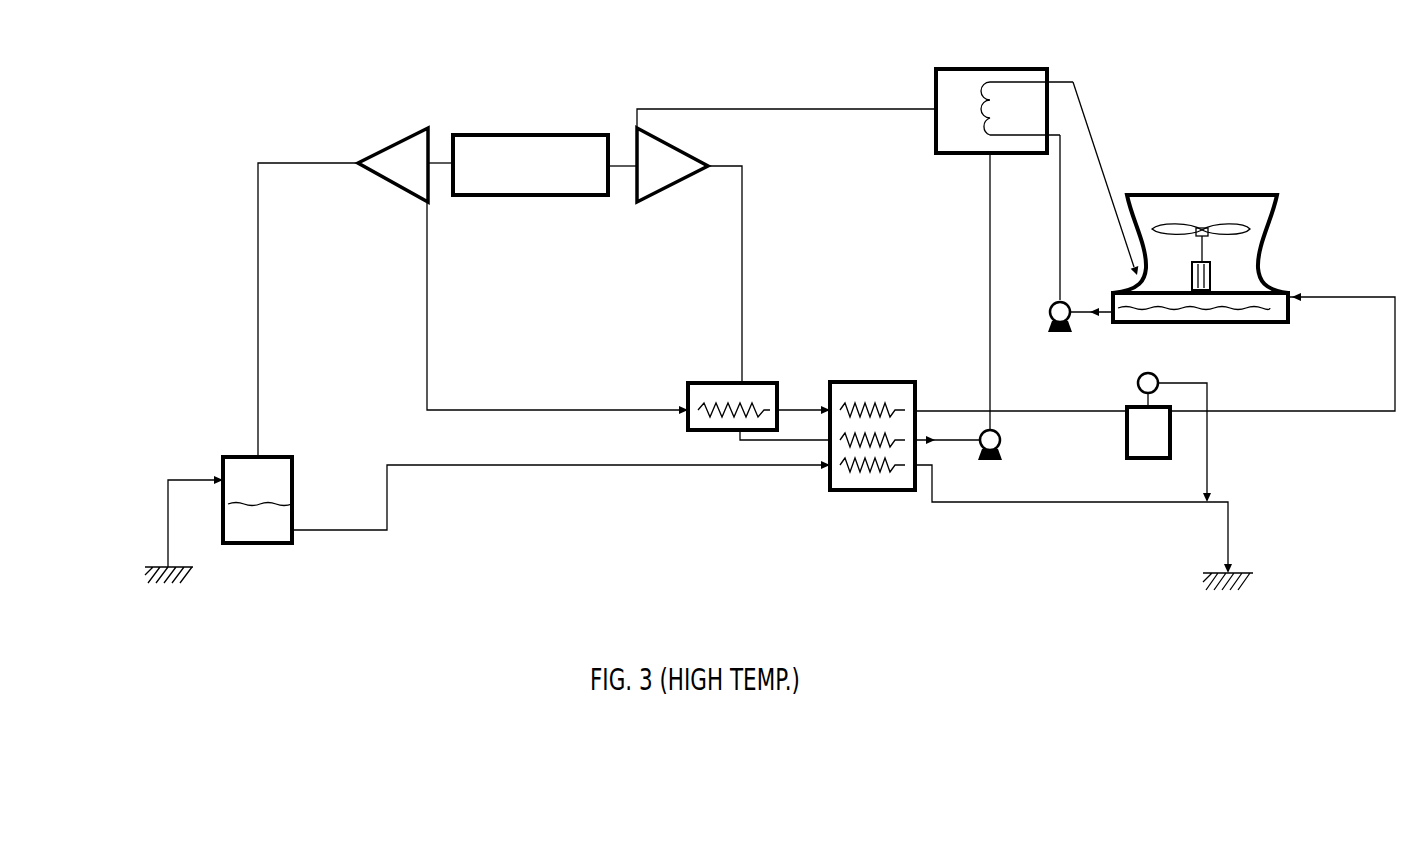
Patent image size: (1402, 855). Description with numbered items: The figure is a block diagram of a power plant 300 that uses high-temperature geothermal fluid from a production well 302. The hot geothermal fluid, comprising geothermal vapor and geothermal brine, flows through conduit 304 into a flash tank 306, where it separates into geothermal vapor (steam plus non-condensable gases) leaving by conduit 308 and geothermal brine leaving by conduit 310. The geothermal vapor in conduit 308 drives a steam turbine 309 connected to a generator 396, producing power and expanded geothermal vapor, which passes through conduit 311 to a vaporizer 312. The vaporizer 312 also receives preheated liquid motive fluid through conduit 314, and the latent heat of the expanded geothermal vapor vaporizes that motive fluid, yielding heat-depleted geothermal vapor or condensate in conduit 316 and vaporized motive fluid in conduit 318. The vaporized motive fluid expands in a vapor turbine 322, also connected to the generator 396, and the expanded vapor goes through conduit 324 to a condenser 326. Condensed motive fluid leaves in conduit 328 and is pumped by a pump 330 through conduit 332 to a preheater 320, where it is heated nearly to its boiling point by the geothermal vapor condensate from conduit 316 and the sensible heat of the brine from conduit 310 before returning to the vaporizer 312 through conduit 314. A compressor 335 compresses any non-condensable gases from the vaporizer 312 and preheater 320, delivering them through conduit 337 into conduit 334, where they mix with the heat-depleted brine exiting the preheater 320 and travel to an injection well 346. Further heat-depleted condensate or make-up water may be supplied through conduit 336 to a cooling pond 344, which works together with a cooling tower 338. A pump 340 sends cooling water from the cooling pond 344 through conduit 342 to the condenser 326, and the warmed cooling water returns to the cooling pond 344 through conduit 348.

The power plant 300 is at (136, 114).
The production well 302 is at (186, 556).
The conduit 304 is at (170, 508).
The flash tank 306 is at (290, 546).
The conduit 308 is at (252, 443).
The steam turbine 309 is at (372, 150).
The generator 396 is at (512, 135).
The vapor turbine 322 is at (662, 180).
The conduit 318 is at (743, 268).
The conduit 324 is at (874, 109).
The condenser 326 is at (1047, 69).
The conduit 348 is at (1103, 152).
The conduit 328 is at (991, 220).
The conduit 342 is at (1061, 232).
The pump 340 is at (1048, 305).
The cooling tower 338 is at (1262, 230).
The cooling pond 344 is at (1185, 326).
The conduit 336 is at (1322, 299).
The conduit 311 is at (497, 410).
The vaporizer 312 is at (690, 426).
The conduit 316 is at (800, 392).
The conduit 314 is at (774, 442).
The conduit 310 is at (497, 465).
The preheater 320 is at (872, 492).
The conduit 332 is at (950, 446).
The pump 330 is at (1002, 440).
The compressor 335 is at (1137, 386).
The conduit 337 is at (1208, 468).
The conduit 334 is at (1230, 532).
The injection well 346 is at (1243, 578).